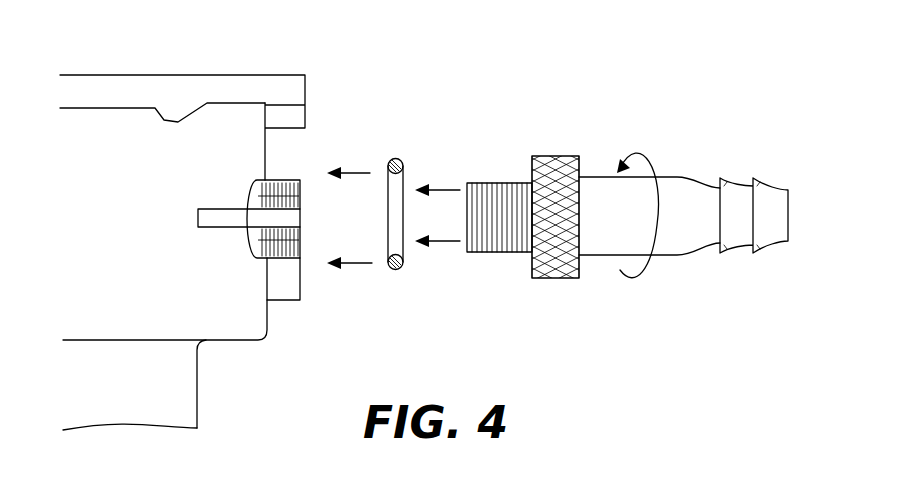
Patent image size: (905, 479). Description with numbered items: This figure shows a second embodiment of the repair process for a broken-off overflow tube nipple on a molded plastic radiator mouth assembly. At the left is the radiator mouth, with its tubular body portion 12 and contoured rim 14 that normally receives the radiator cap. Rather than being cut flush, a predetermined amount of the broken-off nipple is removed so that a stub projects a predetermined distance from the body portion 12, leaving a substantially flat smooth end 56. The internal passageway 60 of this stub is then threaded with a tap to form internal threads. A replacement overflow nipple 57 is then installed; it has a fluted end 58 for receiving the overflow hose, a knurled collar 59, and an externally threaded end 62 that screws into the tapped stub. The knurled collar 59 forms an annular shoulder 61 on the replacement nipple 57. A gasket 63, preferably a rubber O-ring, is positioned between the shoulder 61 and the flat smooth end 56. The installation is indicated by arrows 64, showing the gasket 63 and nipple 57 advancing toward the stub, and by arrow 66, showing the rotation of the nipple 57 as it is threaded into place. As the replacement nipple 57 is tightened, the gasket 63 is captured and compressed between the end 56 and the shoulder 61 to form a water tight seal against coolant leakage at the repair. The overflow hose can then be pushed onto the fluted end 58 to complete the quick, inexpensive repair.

The tubular body portion 12 is at (128, 150).
The contoured rim 14 is at (237, 85).
The flat smooth end 56 is at (302, 190).
The replacement overflow nipple 57 is at (600, 150).
The fluted end 58 is at (740, 258).
The knurled collar 59 is at (558, 278).
The internal passageway 60 is at (303, 238).
The annular shoulder 61 is at (563, 155).
The externally threaded end 62 is at (490, 183).
The gasket 63 is at (395, 272).
The arrows 64 is at (370, 172).
The arrow 66 is at (648, 285).